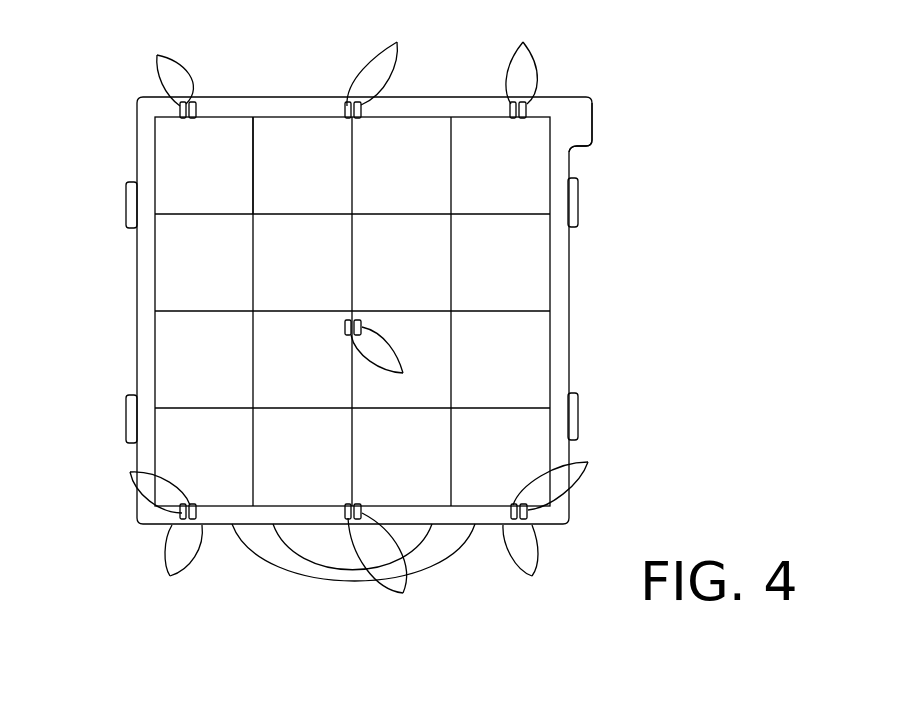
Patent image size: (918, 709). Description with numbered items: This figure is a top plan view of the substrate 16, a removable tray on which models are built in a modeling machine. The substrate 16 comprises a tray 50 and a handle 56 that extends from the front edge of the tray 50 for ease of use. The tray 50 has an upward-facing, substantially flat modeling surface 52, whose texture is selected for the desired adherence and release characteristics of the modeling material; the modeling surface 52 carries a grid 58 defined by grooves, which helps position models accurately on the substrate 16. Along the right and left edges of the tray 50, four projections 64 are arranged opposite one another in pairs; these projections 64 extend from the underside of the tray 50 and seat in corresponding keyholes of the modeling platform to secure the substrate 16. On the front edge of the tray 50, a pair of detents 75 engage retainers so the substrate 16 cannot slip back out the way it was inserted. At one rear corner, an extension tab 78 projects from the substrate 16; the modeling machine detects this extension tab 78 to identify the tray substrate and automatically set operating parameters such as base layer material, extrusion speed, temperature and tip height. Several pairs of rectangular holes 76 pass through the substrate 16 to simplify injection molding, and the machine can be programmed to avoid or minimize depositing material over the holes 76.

The substrate 16 is at (668, 217).
The tray 50 is at (568, 330).
The modeling surface 52 is at (517, 275).
The handle 56 is at (320, 570).
The grid 58 is at (253, 172).
The projections 64 is at (132, 210).
The detents 75 is at (353, 567).
The rectangular holes 76 is at (363, 322).
The extension tab 78 is at (577, 123).